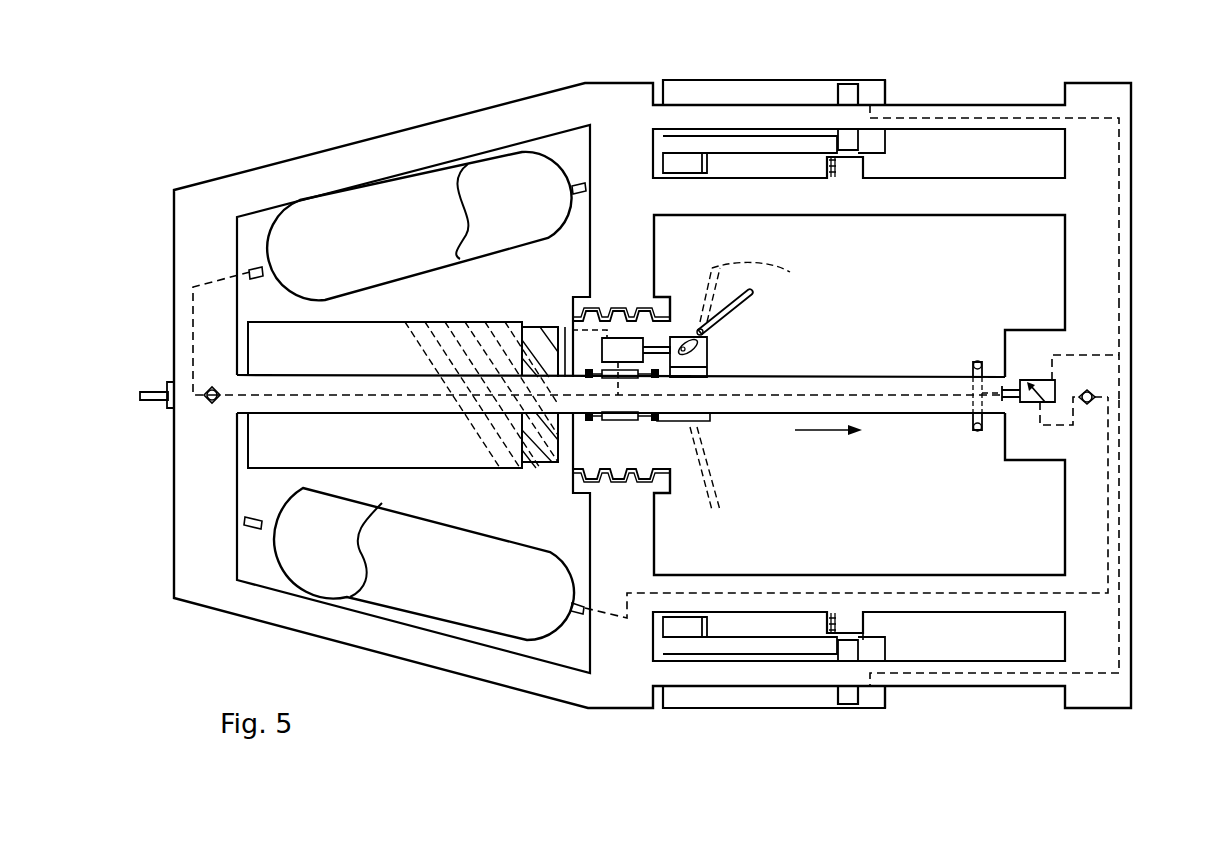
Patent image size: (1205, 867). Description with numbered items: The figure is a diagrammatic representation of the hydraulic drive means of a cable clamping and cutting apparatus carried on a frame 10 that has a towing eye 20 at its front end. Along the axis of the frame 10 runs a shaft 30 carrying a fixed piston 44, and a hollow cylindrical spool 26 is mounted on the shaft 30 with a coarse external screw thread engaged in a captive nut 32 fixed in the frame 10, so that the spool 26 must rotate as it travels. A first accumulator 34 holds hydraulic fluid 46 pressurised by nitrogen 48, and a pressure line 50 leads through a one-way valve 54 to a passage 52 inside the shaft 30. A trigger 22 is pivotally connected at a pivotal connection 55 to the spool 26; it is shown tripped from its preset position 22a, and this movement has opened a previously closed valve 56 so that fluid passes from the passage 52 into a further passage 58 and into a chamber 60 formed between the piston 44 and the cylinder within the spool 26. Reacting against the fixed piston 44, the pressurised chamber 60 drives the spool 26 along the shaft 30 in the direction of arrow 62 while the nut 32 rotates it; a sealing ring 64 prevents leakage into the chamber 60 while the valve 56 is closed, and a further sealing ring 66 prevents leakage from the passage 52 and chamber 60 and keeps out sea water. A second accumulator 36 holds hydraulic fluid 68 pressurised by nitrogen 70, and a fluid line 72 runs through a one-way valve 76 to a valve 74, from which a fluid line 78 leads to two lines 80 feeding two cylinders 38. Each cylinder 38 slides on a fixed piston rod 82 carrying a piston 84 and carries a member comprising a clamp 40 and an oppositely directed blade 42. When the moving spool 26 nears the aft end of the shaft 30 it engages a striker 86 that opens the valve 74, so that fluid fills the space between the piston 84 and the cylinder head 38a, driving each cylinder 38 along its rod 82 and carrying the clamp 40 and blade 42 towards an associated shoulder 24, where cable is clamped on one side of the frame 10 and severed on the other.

The frame 10 is at (331, 172).
The towing eye 20 is at (160, 390).
The trigger 22 is at (753, 296).
The preset position of trigger 22a is at (761, 382).
The shoulder 24 is at (830, 170).
The spool 26 is at (488, 327).
The shaft 30 is at (835, 385).
The captive nut 32 is at (628, 318).
The first accumulator 34 is at (414, 164).
The second accumulator 36 is at (404, 617).
The cylinder 38 is at (727, 80).
The cylinder head 38a is at (888, 95).
The clamp 40 is at (684, 167).
The blade 42 is at (693, 622).
The piston 44 is at (523, 462).
The hydraulic fluid 46 is at (338, 263).
The nitrogen 48 is at (496, 222).
The pressure line 50 is at (207, 285).
The passage 52 is at (303, 393).
The one-way valve 54 is at (210, 402).
The pivotal connection 55 is at (712, 335).
The valve 56 is at (607, 340).
The further passage 58 is at (590, 328).
The chamber 60 is at (565, 337).
The arrow 62 is at (828, 434).
The sealing ring 64 is at (585, 421).
The further sealing ring 66 is at (675, 428).
The hydraulic fluid 68 is at (456, 594).
The nitrogen 70 is at (303, 554).
The fluid line 72 is at (850, 640).
The valve 74 is at (1037, 384).
The one-way valve 76 is at (1093, 403).
The fluid line 78 is at (1110, 355).
The lines 80 is at (1120, 254).
The fixed piston rod 82 is at (975, 130).
The piston 84 is at (858, 143).
The striker 86 is at (975, 431).